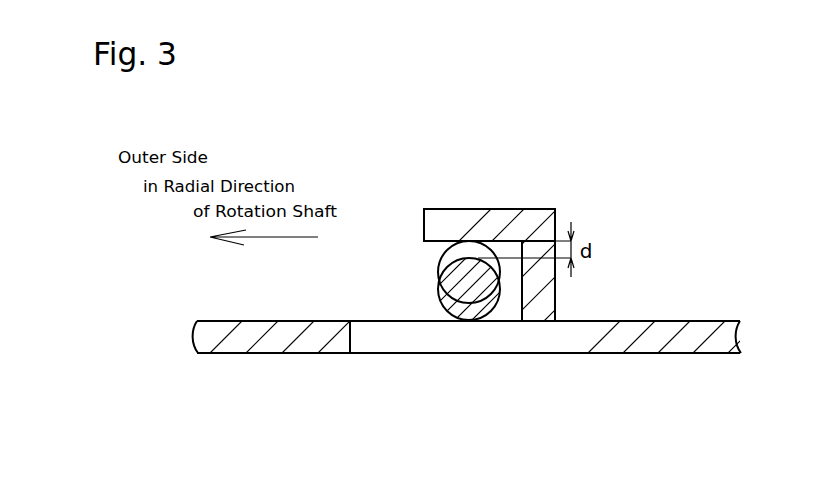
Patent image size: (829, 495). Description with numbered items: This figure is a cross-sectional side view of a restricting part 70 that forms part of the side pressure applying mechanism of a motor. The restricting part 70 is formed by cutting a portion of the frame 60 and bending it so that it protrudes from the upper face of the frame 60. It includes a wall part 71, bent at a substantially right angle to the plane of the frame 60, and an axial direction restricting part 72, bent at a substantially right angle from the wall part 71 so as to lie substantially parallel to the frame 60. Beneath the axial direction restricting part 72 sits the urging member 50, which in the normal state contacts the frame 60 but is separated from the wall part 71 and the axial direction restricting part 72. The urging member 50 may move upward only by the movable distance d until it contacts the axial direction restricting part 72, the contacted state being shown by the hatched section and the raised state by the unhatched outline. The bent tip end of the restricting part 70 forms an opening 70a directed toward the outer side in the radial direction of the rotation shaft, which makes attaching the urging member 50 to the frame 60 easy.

The urging member 50 is at (490, 313).
The frame 60 is at (688, 302).
The restricting part 70 is at (505, 113).
The opening 70a is at (432, 250).
The wall part 71 is at (547, 283).
The axial direction restricting part 72 is at (476, 214).